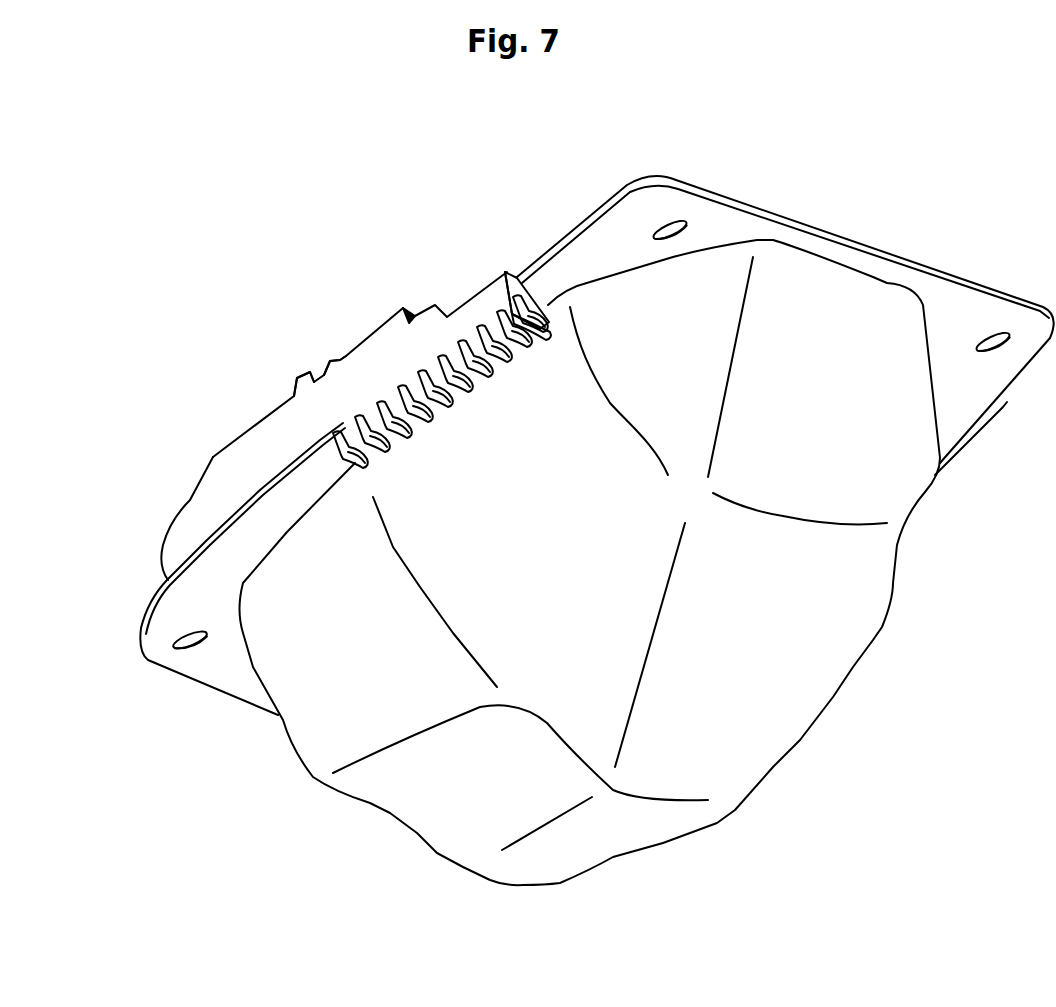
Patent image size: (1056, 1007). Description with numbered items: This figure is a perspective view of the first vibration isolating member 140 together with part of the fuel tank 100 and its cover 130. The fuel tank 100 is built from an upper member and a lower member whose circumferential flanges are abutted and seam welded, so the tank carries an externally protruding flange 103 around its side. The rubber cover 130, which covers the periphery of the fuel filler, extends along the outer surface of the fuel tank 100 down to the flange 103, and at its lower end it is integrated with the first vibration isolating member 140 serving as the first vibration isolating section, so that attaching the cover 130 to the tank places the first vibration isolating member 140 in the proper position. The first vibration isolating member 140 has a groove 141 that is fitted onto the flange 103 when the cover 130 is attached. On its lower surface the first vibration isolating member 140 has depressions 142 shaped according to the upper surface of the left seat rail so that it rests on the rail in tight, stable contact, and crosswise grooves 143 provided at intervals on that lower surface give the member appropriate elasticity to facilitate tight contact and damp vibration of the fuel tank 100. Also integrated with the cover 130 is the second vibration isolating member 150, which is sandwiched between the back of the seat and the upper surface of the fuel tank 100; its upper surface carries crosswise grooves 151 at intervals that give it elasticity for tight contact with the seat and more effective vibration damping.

The fuel tank 100 is at (358, 618).
The flange 103 is at (618, 190).
The cover 130 is at (213, 457).
The first vibration isolating member 140 is at (463, 315).
The groove 141 is at (531, 280).
The depressions 142 is at (520, 332).
The grooves 143 is at (468, 372).
The second vibration isolating member 150 is at (297, 377).
The grooves 151 is at (328, 362).